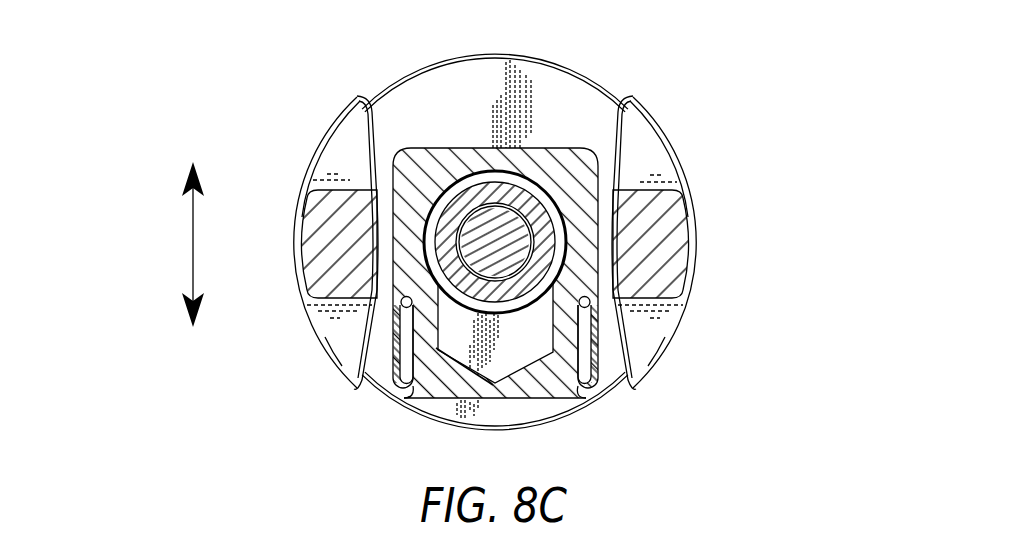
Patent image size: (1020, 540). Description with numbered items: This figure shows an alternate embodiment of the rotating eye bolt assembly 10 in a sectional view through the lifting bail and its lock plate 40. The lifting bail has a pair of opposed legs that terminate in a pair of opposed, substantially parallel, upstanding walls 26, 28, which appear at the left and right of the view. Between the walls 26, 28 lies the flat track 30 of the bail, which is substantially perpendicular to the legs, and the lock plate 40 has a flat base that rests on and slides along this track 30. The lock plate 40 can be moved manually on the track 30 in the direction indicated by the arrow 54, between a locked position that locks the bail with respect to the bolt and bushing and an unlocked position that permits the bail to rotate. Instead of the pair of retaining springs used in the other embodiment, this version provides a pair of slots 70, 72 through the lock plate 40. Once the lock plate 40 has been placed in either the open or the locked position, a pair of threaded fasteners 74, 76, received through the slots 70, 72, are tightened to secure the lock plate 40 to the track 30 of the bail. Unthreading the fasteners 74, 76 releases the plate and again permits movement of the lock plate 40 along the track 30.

The rotating eye bolt assembly 10 is at (748, 108).
The flat track 30 is at (580, 105).
The lock plate 40 is at (423, 153).
The arrow 54 is at (193, 238).
The upstanding wall 26 is at (368, 345).
The upstanding wall 28 is at (623, 345).
The slot 70 is at (408, 360).
The slot 72 is at (588, 360).
The threaded fastener 74 is at (401, 300).
The threaded fastener 76 is at (590, 300).